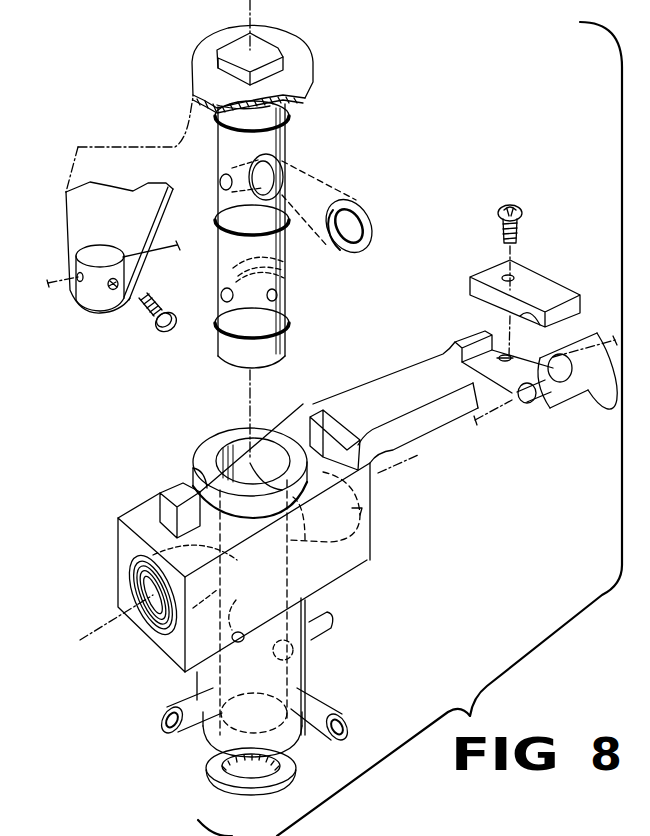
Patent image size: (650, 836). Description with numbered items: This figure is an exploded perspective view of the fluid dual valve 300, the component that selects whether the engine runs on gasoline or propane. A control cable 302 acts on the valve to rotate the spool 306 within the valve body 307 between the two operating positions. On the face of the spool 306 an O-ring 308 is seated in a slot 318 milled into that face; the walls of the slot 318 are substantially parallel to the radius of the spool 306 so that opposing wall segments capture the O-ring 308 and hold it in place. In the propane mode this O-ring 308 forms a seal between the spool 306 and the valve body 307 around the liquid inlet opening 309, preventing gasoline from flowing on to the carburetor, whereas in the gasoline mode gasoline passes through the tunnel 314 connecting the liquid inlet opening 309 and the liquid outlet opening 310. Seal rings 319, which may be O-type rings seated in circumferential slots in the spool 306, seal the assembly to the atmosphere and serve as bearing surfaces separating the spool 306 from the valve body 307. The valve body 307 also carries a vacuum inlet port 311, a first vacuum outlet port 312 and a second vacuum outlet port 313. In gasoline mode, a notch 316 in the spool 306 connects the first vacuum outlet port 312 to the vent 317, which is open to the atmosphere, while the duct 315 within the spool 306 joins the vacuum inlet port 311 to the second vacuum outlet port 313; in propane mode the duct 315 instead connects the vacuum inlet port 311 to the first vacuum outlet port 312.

The fluid dual valve 300 is at (413, 128).
The control cable 302 is at (603, 385).
The spool 306 is at (272, 362).
The valve body 307 is at (352, 568).
The O-ring 308 is at (366, 207).
The liquid inlet opening 309 is at (372, 510).
The liquid outlet opening 310 is at (148, 622).
The vacuum inlet port 311 is at (327, 713).
The first vacuum outlet port 312 is at (324, 628).
The second vacuum outlet port 313 is at (182, 703).
The tunnel 314 is at (221, 183).
The duct 315 is at (222, 300).
The notch 316 is at (288, 279).
The vent 317 is at (233, 612).
The slot 318 is at (288, 176).
The seal rings 319 is at (289, 114).